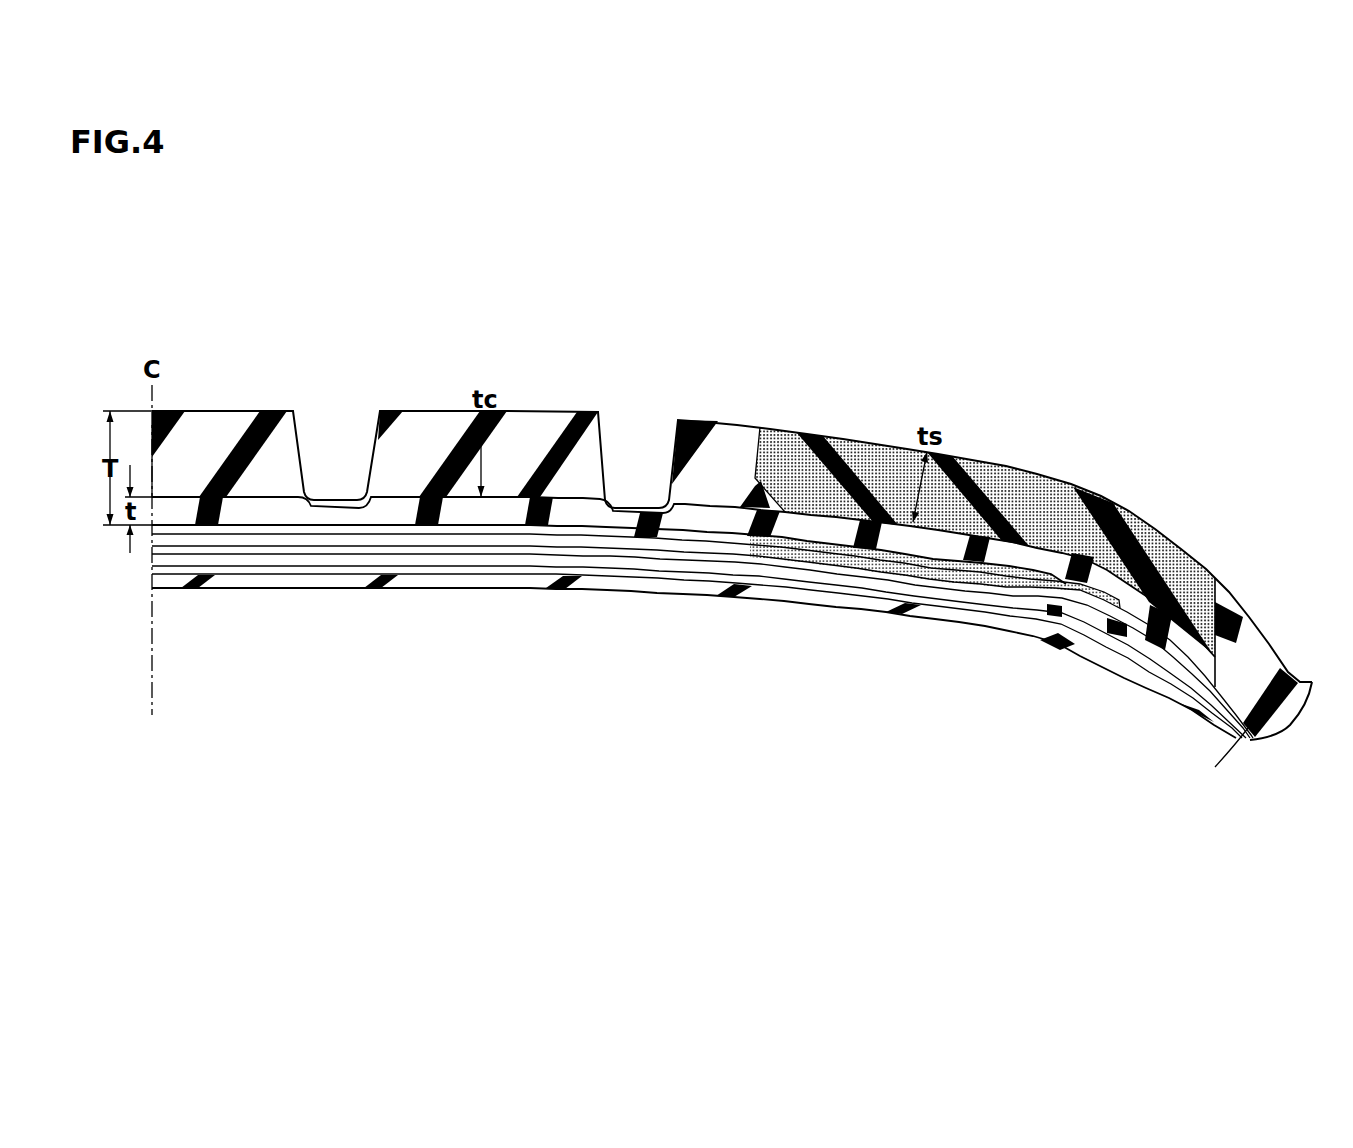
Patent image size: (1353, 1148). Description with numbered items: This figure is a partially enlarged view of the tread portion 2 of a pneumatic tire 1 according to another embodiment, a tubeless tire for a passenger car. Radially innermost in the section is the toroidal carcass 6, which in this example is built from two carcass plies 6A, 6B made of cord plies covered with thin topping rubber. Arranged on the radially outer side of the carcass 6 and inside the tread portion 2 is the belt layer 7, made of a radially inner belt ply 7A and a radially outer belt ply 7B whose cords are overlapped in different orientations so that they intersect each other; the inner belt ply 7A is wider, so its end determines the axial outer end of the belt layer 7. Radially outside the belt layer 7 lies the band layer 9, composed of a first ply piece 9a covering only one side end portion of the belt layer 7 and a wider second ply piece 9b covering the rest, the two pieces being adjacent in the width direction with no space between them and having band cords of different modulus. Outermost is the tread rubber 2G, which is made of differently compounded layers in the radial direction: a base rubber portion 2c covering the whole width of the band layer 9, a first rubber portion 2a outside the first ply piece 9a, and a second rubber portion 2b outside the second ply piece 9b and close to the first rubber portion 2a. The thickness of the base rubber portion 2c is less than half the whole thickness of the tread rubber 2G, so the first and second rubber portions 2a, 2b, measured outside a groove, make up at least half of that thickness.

The pneumatic tire 1 is at (977, 387).
The tread portion 2 is at (414, 387).
The tread rubber 2G is at (820, 296).
The first rubber portion 2a is at (801, 432).
The second rubber portion 2b is at (560, 430).
The base rubber portion 2c is at (693, 517).
The carcass 6 is at (1210, 830).
The carcass ply 6A is at (1147, 663).
The carcass ply 6B is at (1212, 708).
The belt layer 7 is at (373, 712).
The inner belt ply 7A is at (267, 547).
The outer belt ply 7B is at (350, 538).
The band layer 9 is at (812, 720).
The first ply piece 9a is at (803, 547).
The second ply piece 9b is at (638, 537).